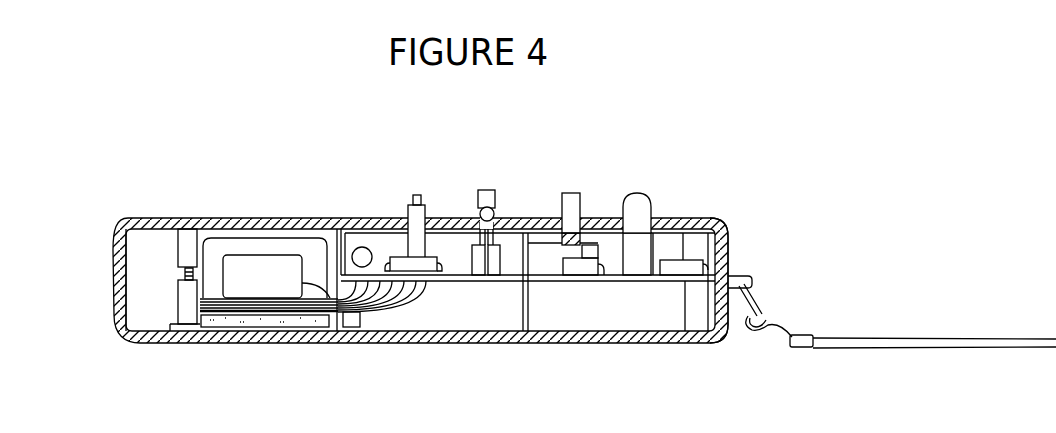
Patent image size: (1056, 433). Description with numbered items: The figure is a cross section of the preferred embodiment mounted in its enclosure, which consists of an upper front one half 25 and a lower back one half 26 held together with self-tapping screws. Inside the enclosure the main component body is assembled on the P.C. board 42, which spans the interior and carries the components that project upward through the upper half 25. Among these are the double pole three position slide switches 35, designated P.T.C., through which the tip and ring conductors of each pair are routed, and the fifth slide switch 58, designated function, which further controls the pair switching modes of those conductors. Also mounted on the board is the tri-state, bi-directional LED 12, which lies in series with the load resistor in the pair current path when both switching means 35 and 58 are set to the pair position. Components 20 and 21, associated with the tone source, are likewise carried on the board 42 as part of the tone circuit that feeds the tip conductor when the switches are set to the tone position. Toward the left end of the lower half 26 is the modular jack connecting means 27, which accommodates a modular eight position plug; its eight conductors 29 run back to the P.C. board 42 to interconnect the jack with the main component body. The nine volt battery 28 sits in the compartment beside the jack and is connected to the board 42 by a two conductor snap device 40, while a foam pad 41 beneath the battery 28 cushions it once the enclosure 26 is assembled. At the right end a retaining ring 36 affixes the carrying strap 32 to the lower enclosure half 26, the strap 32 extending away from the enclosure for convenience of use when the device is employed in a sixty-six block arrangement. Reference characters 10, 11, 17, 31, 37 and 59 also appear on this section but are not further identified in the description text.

The electronic component 10 is at (586, 264).
The switch 11 is at (426, 190).
The tri-state, bi-directional LED 12 is at (656, 192).
The housing end 17 is at (728, 248).
The tone source related component 20 is at (431, 263).
The tone source related component 21 is at (362, 256).
The upper front one half 25 is at (181, 215).
The lower back one half 26 is at (516, 347).
The modular jack connecting means 27 is at (142, 295).
The nine volt battery 28 is at (234, 232).
The eight conductors 29 is at (363, 318).
The link 31 is at (759, 298).
The carrying strap 32 is at (853, 329).
The double pole three position slide switch 35 is at (586, 188).
The retaining ring 36 is at (754, 271).
The ball 37 is at (499, 208).
The two conductor snap device 40 is at (282, 253).
The foam pad 41 is at (233, 318).
The P.C. board 42 is at (618, 287).
The fifth slide switch 58 is at (495, 182).
The component 59 is at (658, 250).